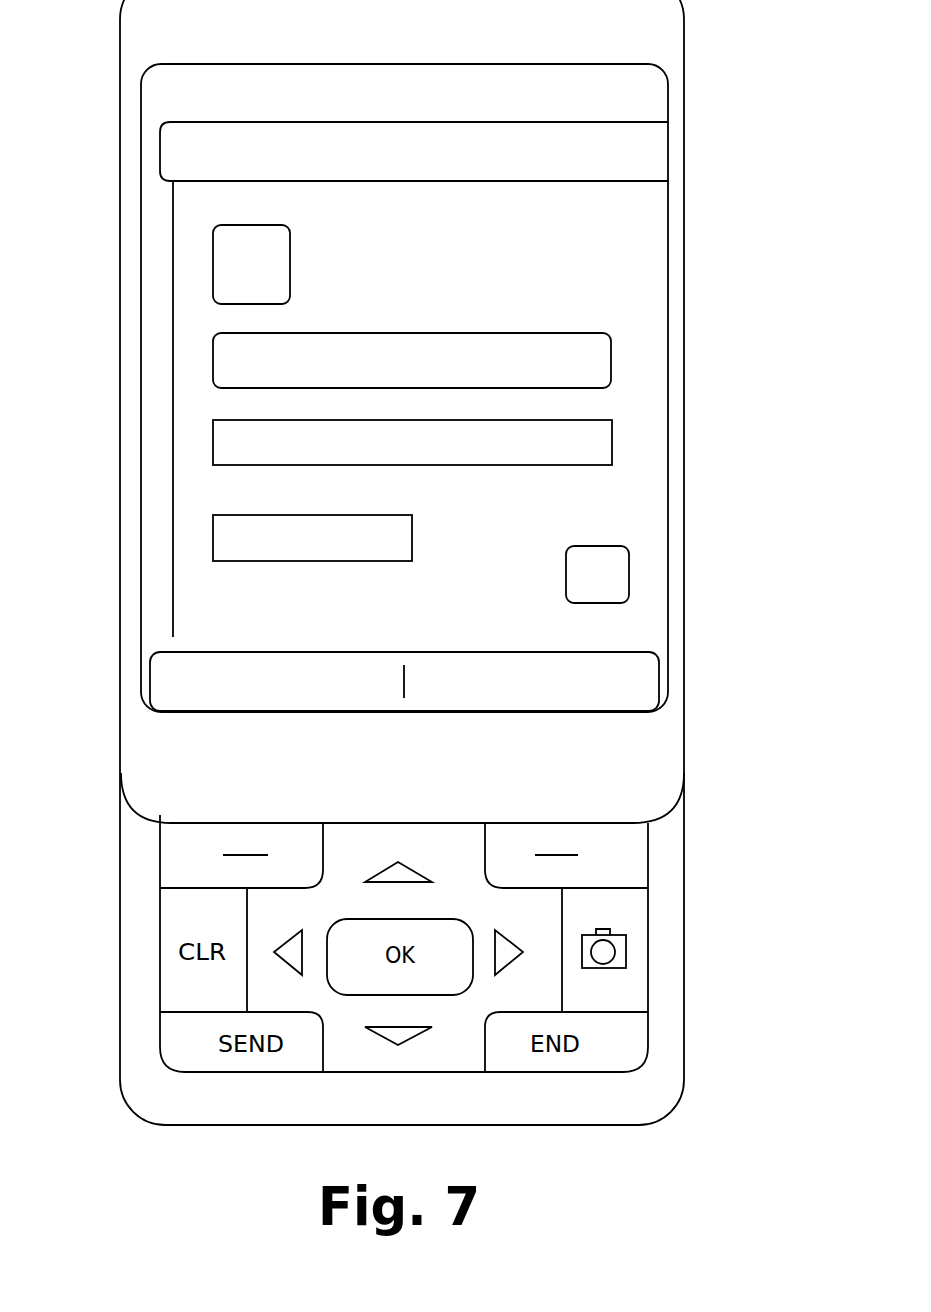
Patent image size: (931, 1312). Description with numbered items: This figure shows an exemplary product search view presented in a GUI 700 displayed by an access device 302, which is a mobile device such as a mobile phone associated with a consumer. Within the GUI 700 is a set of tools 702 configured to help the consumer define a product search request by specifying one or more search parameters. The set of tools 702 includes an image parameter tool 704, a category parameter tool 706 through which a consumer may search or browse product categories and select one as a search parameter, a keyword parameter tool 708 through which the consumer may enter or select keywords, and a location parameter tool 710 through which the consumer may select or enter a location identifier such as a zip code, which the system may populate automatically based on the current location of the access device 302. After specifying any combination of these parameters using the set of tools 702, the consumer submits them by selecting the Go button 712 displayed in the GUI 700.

The access device 302 is at (684, 23).
The GUI 700 is at (668, 197).
The set of tools 702 is at (196, 197).
The image parameter tool 704 is at (290, 232).
The category parameter tool 706 is at (530, 333).
The keyword parameter tool 708 is at (520, 465).
The location parameter tool 710 is at (412, 533).
The Go button 712 is at (566, 583).